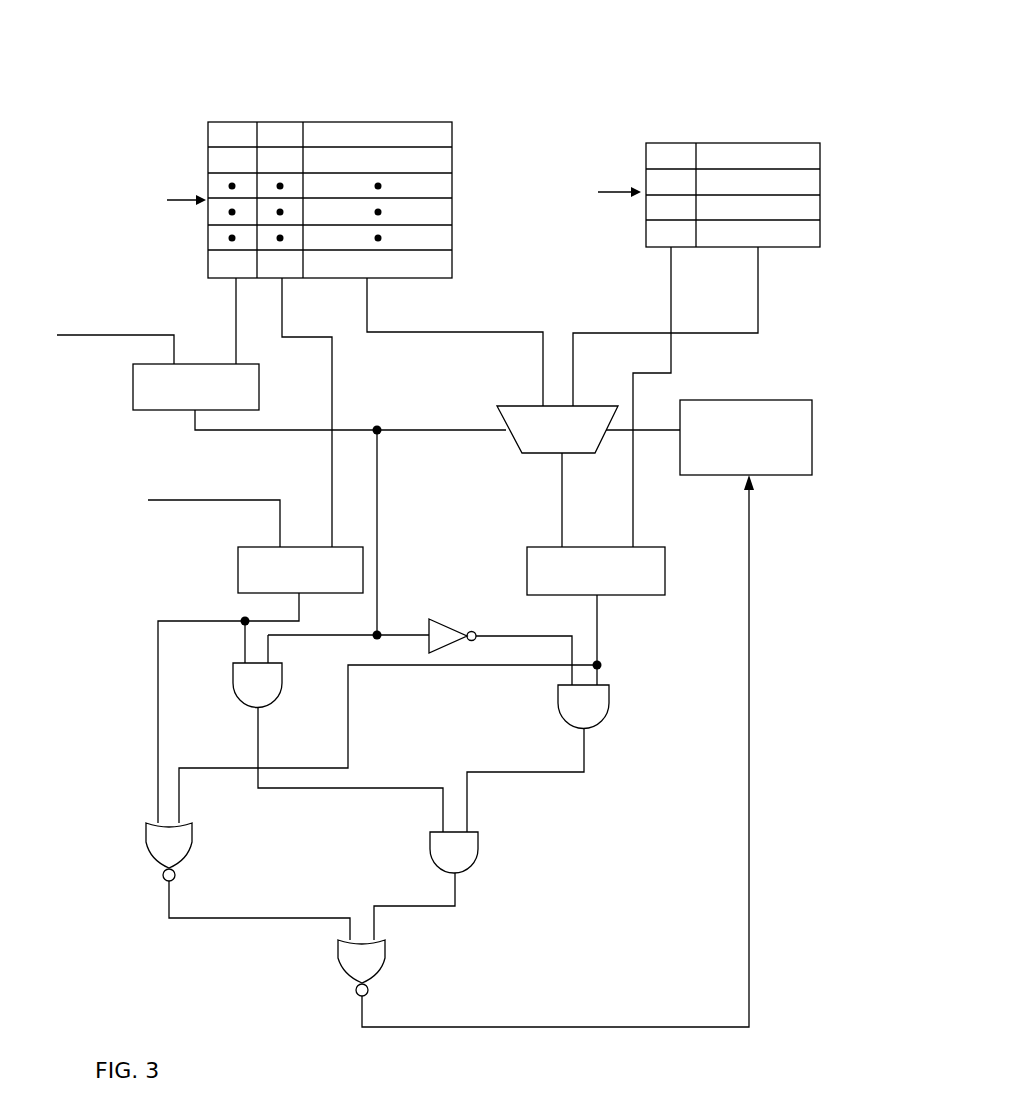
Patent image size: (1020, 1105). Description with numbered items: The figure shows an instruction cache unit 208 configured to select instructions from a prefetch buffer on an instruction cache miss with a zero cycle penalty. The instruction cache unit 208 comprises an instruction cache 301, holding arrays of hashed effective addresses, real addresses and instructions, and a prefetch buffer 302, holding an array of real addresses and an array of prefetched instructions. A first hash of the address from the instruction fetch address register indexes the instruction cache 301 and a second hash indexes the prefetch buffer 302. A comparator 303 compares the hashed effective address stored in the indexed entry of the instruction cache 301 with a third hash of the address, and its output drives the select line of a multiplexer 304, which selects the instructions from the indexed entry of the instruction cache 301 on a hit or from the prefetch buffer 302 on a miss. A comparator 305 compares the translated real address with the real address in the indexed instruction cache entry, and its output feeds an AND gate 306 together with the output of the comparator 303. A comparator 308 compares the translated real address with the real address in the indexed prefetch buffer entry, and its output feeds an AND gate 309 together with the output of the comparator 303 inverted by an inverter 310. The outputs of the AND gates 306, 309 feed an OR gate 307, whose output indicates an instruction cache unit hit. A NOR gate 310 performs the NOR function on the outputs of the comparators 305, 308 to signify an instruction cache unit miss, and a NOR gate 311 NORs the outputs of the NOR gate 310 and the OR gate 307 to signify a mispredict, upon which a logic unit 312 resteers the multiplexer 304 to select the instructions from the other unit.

The instruction cache unit 208 is at (613, 76).
The instruction cache 301 is at (430, 121).
The prefetch buffer 302 is at (790, 247).
The comparator 303 is at (262, 387).
The multiplexer 304 is at (522, 405).
The comparator 305 is at (236, 568).
The AND gate 306 is at (233, 683).
The OR gate 307 is at (480, 843).
The comparator 308 is at (667, 565).
The AND gate 309 is at (611, 703).
The inverter / NOR gate 310 is at (445, 618).
The NOR gate 311 is at (387, 952).
The logic unit 312 is at (736, 398).